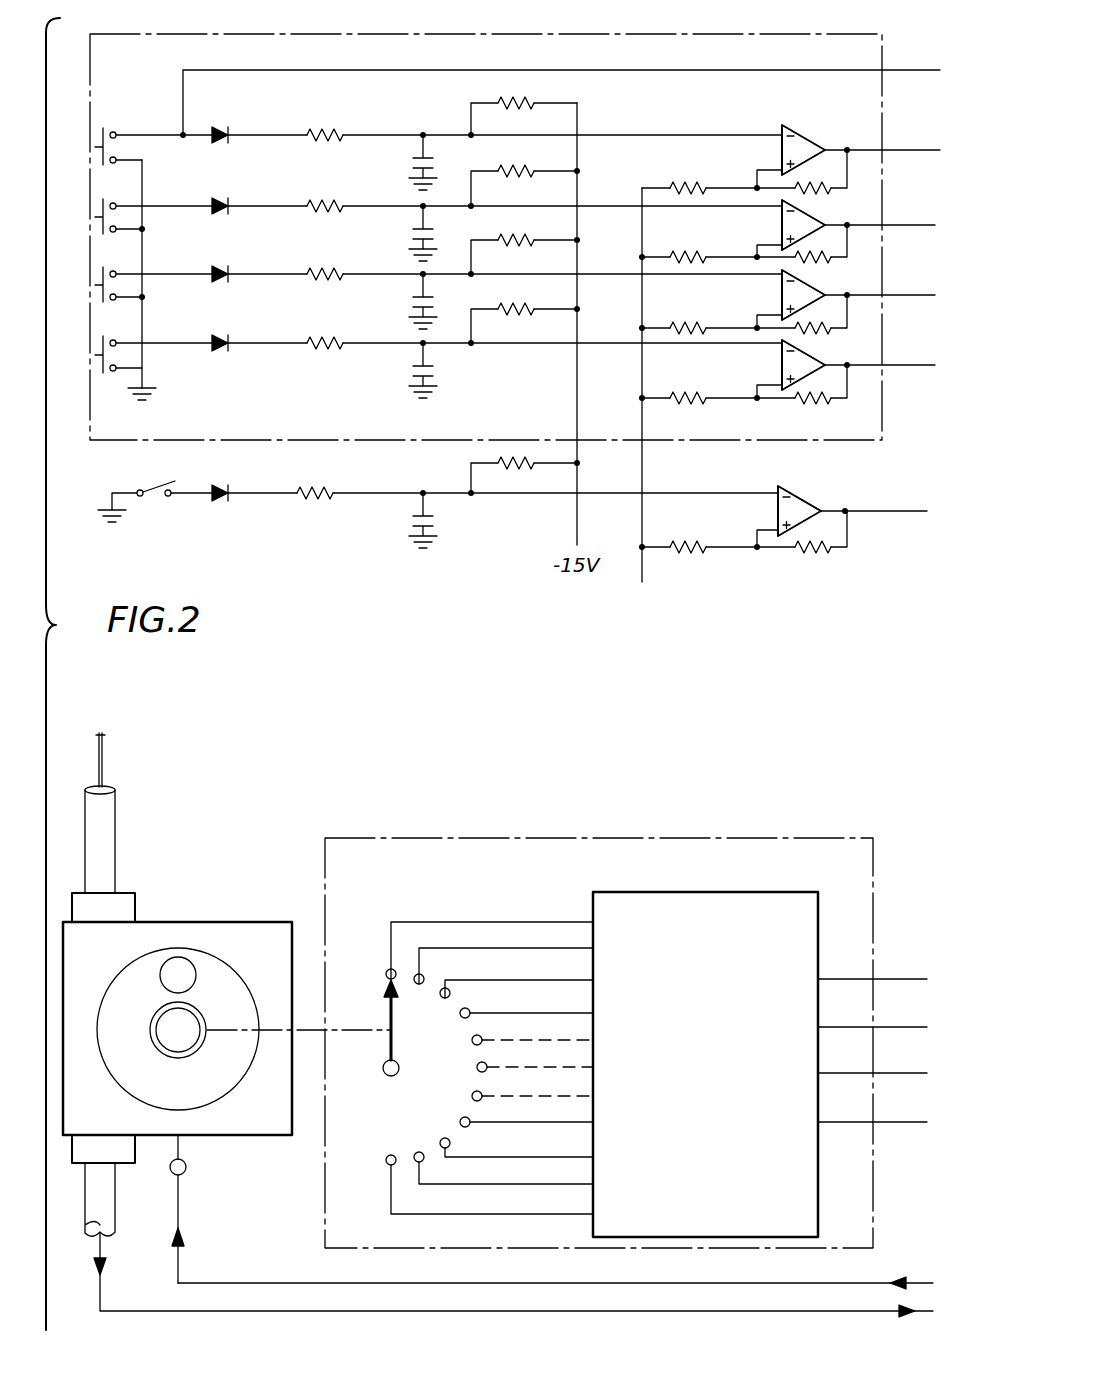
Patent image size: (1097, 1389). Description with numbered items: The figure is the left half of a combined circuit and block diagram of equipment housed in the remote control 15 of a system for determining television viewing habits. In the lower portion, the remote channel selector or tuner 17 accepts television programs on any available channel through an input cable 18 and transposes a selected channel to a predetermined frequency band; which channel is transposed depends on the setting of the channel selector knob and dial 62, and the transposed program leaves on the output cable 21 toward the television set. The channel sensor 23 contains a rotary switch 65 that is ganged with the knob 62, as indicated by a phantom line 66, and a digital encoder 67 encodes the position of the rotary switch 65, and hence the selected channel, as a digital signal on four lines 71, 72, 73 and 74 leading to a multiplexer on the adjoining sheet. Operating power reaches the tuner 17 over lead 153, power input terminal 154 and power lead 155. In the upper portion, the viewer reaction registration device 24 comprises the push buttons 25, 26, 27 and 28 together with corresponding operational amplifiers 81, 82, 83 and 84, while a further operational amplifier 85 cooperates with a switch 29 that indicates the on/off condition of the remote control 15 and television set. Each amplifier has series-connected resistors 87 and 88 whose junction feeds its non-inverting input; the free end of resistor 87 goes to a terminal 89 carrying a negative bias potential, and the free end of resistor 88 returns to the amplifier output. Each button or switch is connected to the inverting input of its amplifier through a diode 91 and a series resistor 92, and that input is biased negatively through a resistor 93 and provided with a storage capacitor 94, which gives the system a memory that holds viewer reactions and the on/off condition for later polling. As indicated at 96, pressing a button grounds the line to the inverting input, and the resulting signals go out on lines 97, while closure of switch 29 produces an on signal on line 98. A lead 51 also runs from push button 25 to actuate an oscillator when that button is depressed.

The viewer reaction registration device 24 is at (424, 55).
The remote control 15 is at (150, 95).
The push button 25 is at (95, 147).
The push button 26 is at (95, 217).
The push button 27 is at (95, 285).
The push button 28 is at (95, 355).
The switch 29 is at (155, 486).
The diode 91 is at (220, 126).
The resistor 92 is at (323, 128).
The resistor 93 is at (530, 103).
The storage capacitor 94 is at (412, 163).
The ground 96 is at (142, 382).
The lead 51 is at (695, 72).
The resistor 87 is at (685, 185).
The resistor 88 is at (818, 195).
The terminal 89 is at (644, 582).
The operational amplifier 81 is at (780, 152).
The operational amplifier 82 is at (780, 227).
The operational amplifier 83 is at (780, 297).
The operational amplifier 84 is at (780, 367).
The operational amplifier 85 is at (790, 500).
The lines 97 is at (916, 150).
The line 98 is at (910, 508).
The channel sensor 23 is at (470, 865).
The input cable 18 is at (115, 840).
The remote channel selector or tuner 17 is at (232, 920).
The channel selector knob and dial 62 is at (150, 1010).
The phantom line 66 is at (340, 1030).
The rotary switch 65 is at (383, 1060).
The digital encoder 67 is at (706, 892).
The line 71 is at (914, 977).
The line 72 is at (914, 1026).
The line 73 is at (914, 1072).
The line 74 is at (914, 1121).
The power lead 155 is at (181, 1145).
The power input terminal 154 is at (185, 1172).
The lead 153 is at (300, 1283).
The output cable 21 is at (116, 1212).